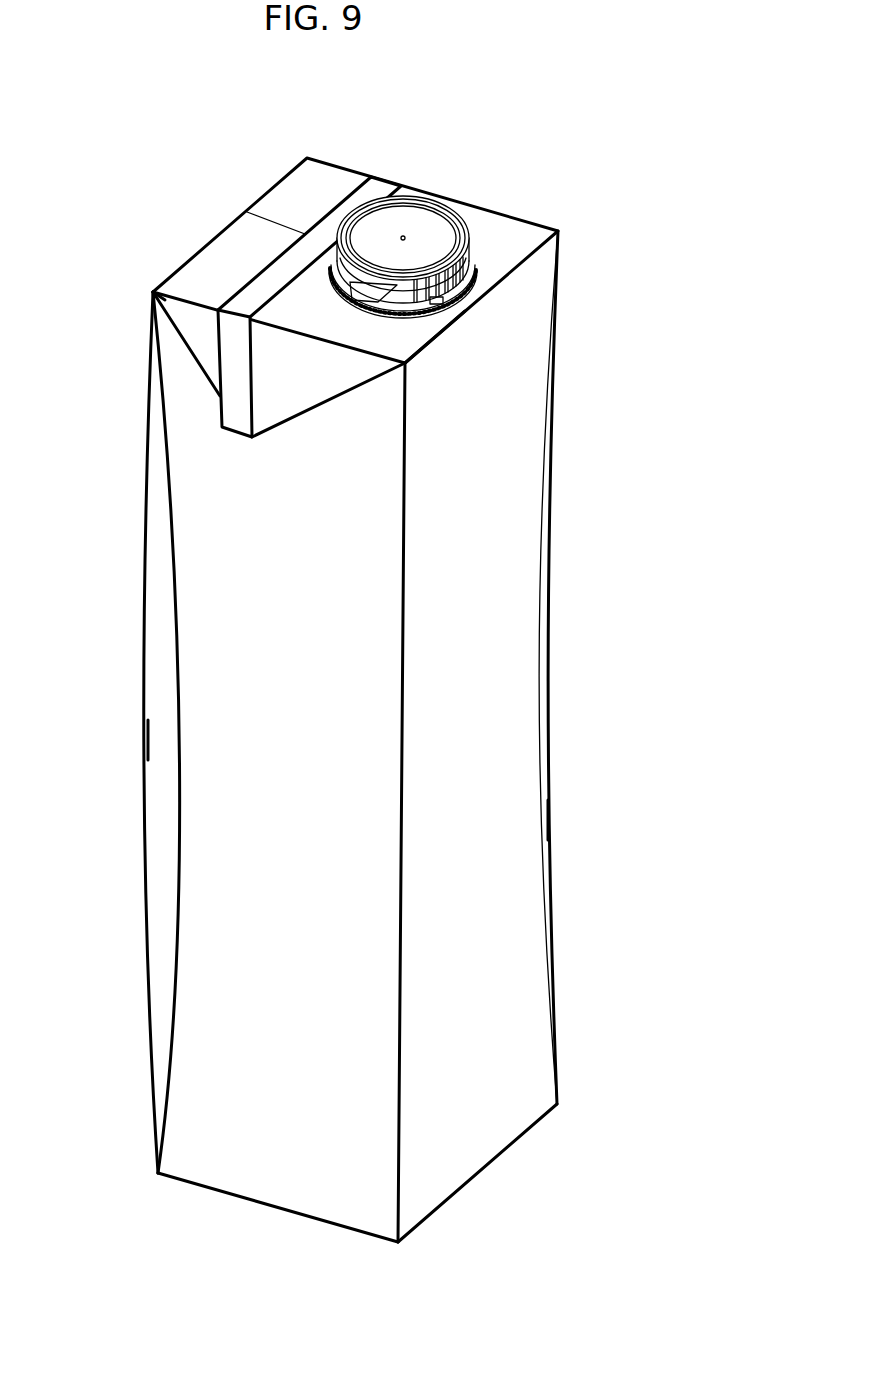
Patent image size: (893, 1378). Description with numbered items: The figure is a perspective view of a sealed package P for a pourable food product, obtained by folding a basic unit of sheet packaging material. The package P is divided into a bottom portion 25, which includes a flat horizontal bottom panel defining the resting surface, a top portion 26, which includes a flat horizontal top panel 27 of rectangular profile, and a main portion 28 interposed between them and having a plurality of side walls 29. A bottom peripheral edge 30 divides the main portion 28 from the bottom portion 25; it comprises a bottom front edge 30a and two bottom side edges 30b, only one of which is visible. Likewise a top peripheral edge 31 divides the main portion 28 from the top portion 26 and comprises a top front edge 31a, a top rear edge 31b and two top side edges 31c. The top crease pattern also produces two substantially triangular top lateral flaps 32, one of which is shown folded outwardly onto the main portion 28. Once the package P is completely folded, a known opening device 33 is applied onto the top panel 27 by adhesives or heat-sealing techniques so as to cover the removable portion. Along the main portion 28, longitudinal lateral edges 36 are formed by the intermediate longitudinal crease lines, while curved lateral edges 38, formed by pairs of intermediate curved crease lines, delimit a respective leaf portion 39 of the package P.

The sealed package P is at (127, 170).
The bottom portion 25 is at (470, 1195).
The top portion 26 is at (560, 198).
The top panel 27 is at (513, 230).
The main portion 28 is at (490, 903).
The side walls 29 is at (387, 530).
The bottom peripheral edge 30 is at (540, 1130).
The bottom front edge 30a is at (510, 1150).
The bottom side edges 30b is at (208, 1193).
The top peripheral edge 31 is at (517, 280).
The top front edge 31a is at (465, 313).
The top rear edge 31b is at (225, 223).
The top side edges 31c is at (337, 165).
The top lateral flaps 32 is at (278, 407).
The opening device 33 is at (413, 218).
The longitudinal lateral edges 36 is at (400, 880).
The curved lateral edges 38 is at (550, 772).
The leaf portion 39 is at (550, 823).